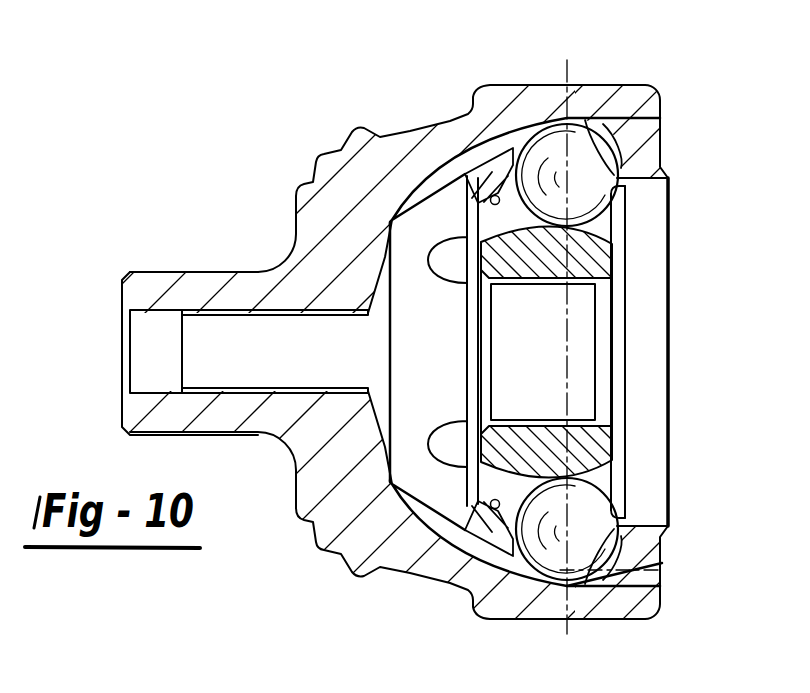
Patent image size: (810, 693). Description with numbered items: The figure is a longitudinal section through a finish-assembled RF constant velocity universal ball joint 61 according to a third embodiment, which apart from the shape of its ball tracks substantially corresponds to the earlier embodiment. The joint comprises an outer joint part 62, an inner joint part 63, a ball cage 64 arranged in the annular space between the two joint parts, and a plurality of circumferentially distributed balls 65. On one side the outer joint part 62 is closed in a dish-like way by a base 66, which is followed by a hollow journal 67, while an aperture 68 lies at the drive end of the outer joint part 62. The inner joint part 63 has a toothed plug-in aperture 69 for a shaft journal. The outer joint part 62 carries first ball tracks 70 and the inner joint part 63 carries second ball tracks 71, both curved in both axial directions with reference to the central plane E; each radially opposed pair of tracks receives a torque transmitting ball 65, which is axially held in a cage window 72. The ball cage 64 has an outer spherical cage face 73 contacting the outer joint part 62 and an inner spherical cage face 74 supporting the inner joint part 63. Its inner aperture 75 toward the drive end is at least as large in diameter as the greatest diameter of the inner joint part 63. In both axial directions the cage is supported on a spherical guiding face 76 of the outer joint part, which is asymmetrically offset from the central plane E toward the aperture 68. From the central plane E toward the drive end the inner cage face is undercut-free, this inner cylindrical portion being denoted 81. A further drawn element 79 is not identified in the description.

The RF constant velocity universal ball joint 61 is at (372, 78).
The outer joint part 62 is at (410, 135).
The inner joint part 63 is at (612, 252).
The ball cage 64 is at (633, 165).
The balls 65 is at (527, 122).
The base 66 is at (333, 198).
The hollow journal 67 is at (207, 292).
The aperture 68 is at (686, 143).
The toothed plug-in aperture 69 is at (556, 286).
The first ball tracks 70 is at (620, 130).
The second ball tracks 71 is at (613, 222).
The cage window 72 is at (600, 117).
The outer spherical cage face 73 is at (478, 170).
The inner spherical cage face 74 is at (486, 168).
The inner aperture 75 is at (672, 350).
The spherical guiding face 76 is at (492, 522).
The lower lip 79 is at (497, 522).
The undercut-free inner cylindrical portion 81 is at (650, 522).
The central plane E is at (622, 583).